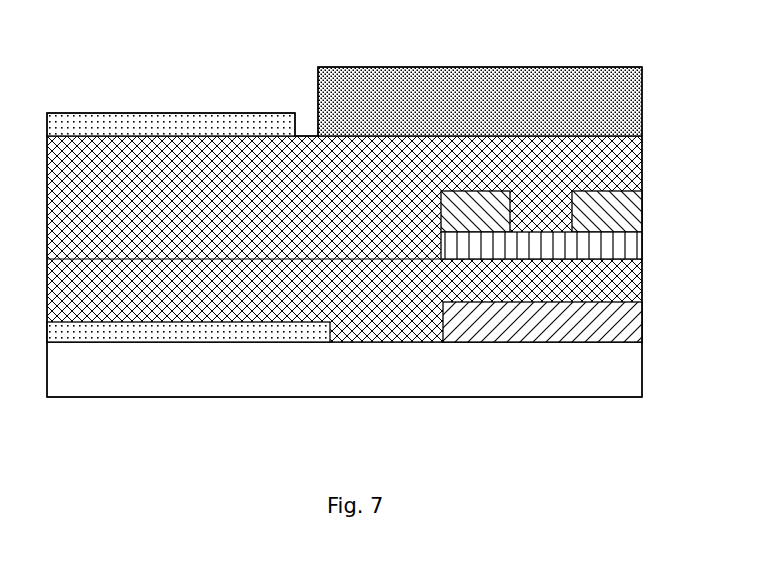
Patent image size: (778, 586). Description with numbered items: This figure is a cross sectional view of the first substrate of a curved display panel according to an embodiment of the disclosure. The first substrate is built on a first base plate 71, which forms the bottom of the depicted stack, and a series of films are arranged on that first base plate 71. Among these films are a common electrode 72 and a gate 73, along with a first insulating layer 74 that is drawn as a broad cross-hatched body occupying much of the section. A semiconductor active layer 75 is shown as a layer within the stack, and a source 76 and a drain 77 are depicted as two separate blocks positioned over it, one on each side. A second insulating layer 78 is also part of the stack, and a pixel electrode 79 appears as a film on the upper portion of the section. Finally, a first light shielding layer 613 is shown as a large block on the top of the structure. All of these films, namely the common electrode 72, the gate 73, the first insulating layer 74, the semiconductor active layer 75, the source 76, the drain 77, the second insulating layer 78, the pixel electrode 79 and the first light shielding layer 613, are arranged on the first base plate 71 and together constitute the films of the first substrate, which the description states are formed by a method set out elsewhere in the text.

The first base plate 71 is at (275, 392).
The common electrode 72 is at (137, 337).
The gate 73 is at (565, 332).
The first insulating layer 74 is at (365, 337).
The semiconductor active layer 75 is at (473, 252).
The source 76 is at (468, 203).
The drain 77 is at (597, 203).
The second insulating layer 78 is at (180, 153).
The pixel electrode 79 is at (87, 123).
The first light shielding layer 613 is at (353, 75).